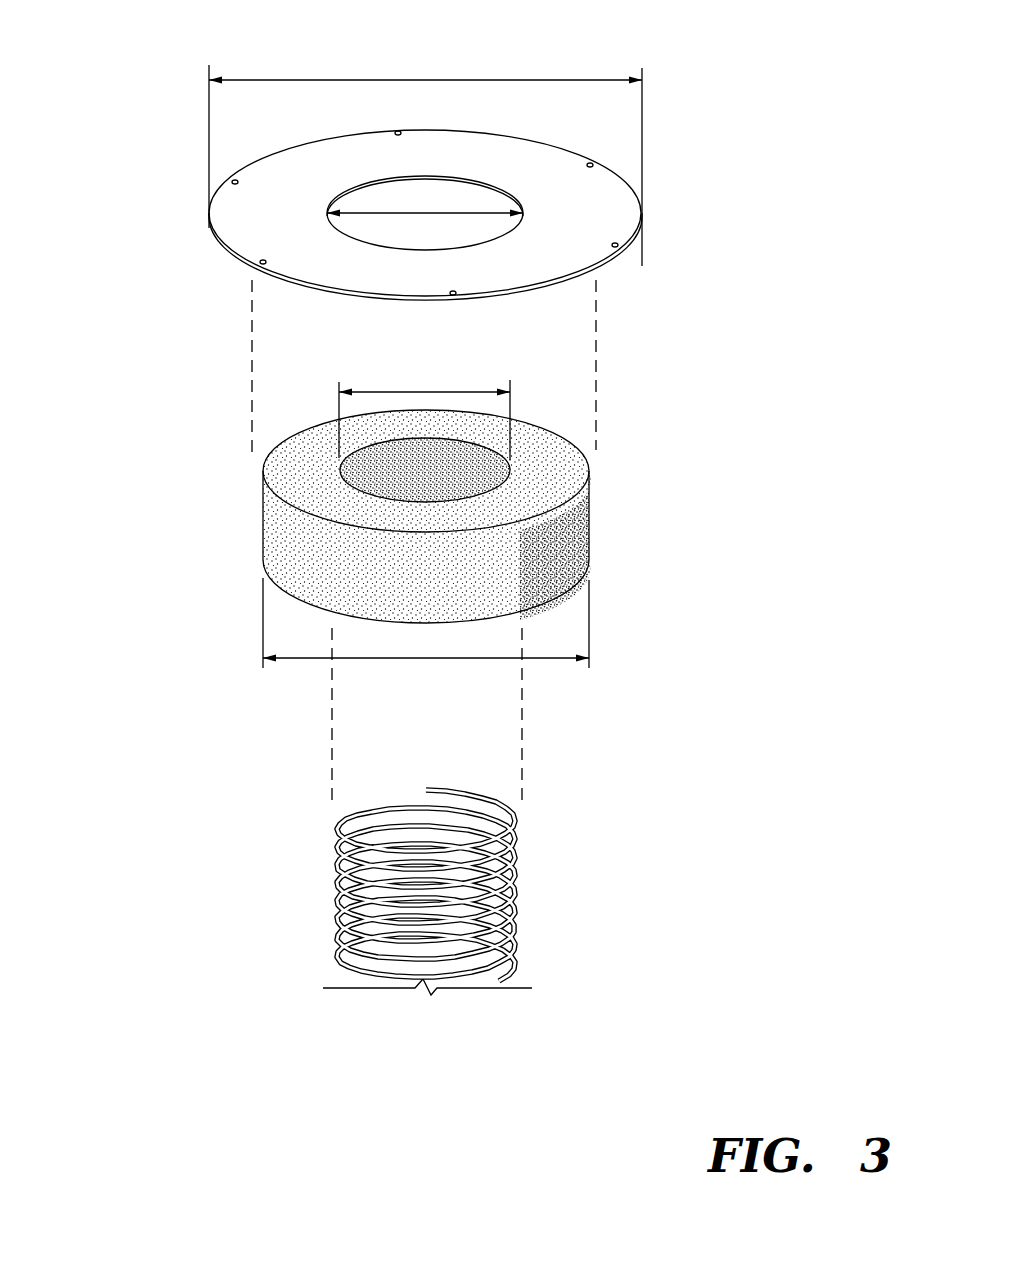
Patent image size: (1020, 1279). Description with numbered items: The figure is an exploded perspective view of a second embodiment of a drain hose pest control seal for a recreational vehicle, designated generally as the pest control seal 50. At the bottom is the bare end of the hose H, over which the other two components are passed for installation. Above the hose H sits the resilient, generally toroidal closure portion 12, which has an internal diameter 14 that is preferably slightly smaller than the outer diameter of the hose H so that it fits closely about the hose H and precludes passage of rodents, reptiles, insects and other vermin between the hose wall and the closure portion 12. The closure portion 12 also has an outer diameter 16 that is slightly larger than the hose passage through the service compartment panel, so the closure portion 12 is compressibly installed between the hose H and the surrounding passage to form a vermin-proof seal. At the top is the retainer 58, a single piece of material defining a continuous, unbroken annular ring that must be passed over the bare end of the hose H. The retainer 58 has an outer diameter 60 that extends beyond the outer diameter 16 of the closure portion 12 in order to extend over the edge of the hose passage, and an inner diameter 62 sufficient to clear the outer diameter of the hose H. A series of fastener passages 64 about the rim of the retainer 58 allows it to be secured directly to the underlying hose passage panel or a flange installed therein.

The pest control seal 50 is at (150, 864).
The retainer 58 is at (228, 250).
The outer diameter 60 is at (546, 80).
The inner diameter 62 is at (420, 213).
The fastener passages 64 is at (397, 133).
The closure portion 12 is at (263, 550).
The internal diameter 14 is at (372, 392).
The outer diameter 16 is at (317, 660).
The hose H is at (338, 900).